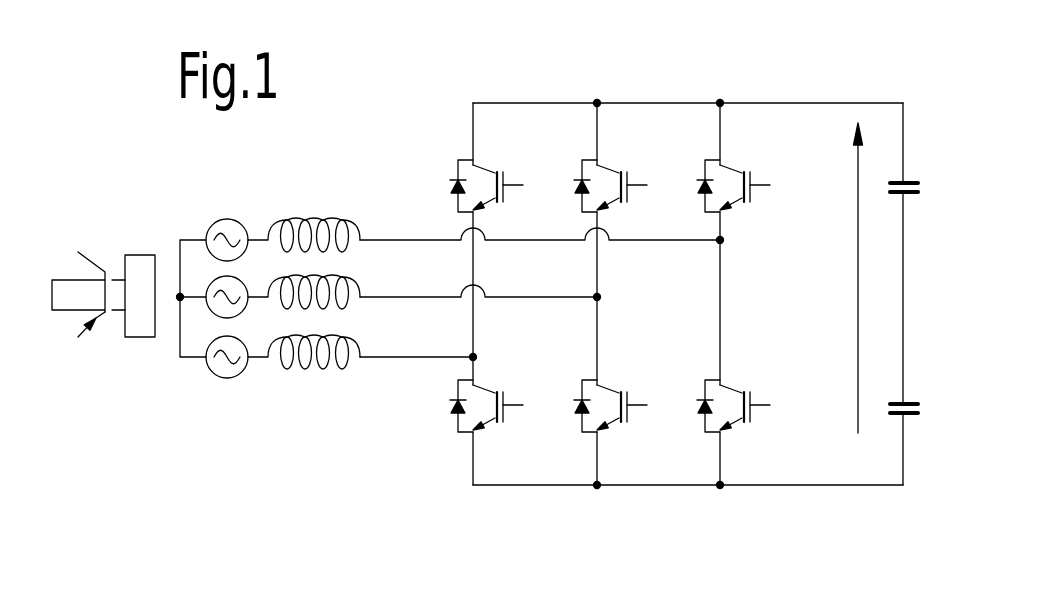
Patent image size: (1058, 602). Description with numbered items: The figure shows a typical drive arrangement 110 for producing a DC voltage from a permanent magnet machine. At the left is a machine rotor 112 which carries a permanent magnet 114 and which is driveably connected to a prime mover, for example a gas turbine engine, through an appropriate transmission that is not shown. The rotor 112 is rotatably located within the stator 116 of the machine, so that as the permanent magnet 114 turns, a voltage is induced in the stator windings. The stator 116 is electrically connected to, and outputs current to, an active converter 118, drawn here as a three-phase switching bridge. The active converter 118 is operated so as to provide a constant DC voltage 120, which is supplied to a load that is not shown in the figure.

The drive arrangement 110 is at (684, 292).
The machine rotor 112 is at (136, 357).
The permanent magnet 114 is at (157, 258).
The stator 116 is at (351, 199).
The active converter 118 is at (554, 513).
The constant DC voltage 120 is at (858, 328).